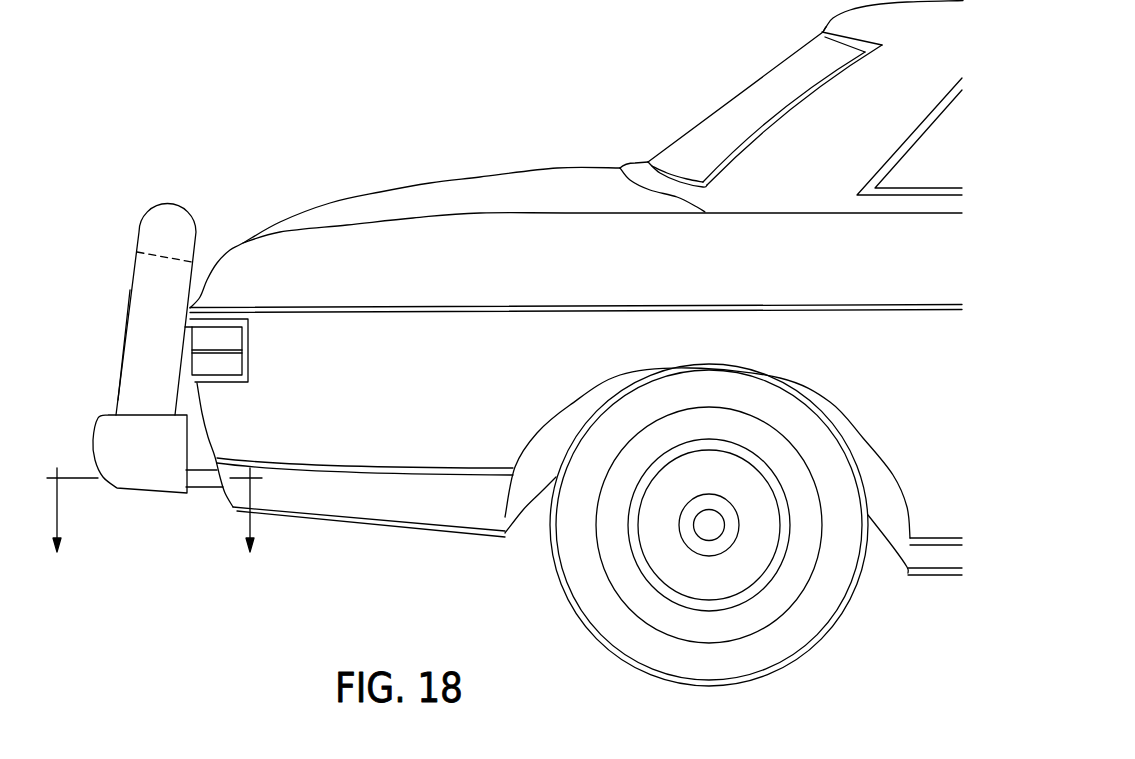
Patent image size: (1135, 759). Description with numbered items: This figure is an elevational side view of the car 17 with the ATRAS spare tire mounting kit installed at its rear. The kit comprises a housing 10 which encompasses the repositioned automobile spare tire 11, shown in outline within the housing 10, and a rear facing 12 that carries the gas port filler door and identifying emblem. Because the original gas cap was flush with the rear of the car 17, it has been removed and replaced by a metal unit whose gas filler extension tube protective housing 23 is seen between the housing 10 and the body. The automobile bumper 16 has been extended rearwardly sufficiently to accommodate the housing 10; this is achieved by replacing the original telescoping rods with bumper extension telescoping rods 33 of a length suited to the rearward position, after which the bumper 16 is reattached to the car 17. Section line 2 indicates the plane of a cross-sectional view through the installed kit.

The section line 2- 2 is at (154, 527).
The housing 10 is at (162, 233).
The spare tire 11 is at (137, 252).
The rear facing 12 is at (129, 295).
The bumper 16 is at (137, 447).
The car 17 is at (580, 198).
The gas filler extension tube protective housing 23 is at (190, 310).
The bumper extension telescoping rod 33 is at (203, 483).